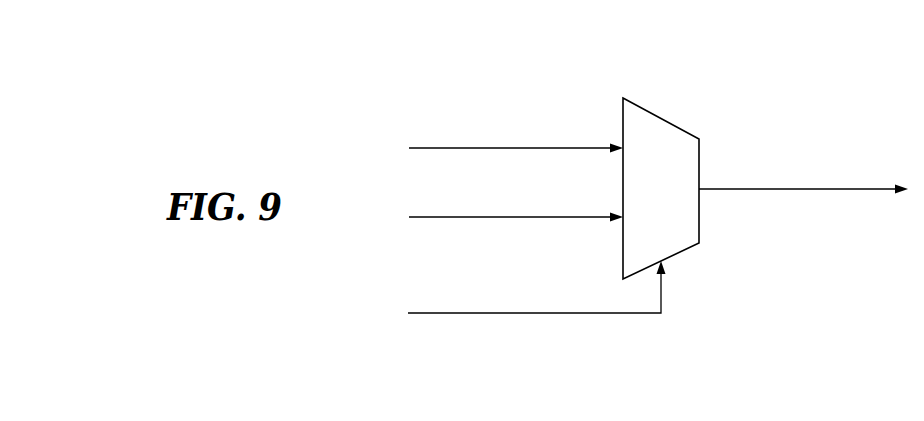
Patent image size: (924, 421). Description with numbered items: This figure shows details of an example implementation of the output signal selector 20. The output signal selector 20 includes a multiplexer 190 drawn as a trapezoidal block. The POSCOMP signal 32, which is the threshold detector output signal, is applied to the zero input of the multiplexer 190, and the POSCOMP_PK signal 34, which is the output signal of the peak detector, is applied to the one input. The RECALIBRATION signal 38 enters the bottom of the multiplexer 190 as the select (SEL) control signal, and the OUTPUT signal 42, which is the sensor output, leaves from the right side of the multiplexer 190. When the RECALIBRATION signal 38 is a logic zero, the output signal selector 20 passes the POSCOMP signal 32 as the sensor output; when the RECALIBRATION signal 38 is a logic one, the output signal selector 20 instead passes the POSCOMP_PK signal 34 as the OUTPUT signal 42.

The output signal selector 20 is at (766, 98).
The multiplexer 190 is at (683, 200).
The POSCOMP signal 32 is at (420, 147).
The POSCOMP_PK signal 34 is at (420, 216).
The RECALIBRATION signal 38 is at (562, 314).
The OUTPUT signal 42 is at (780, 190).